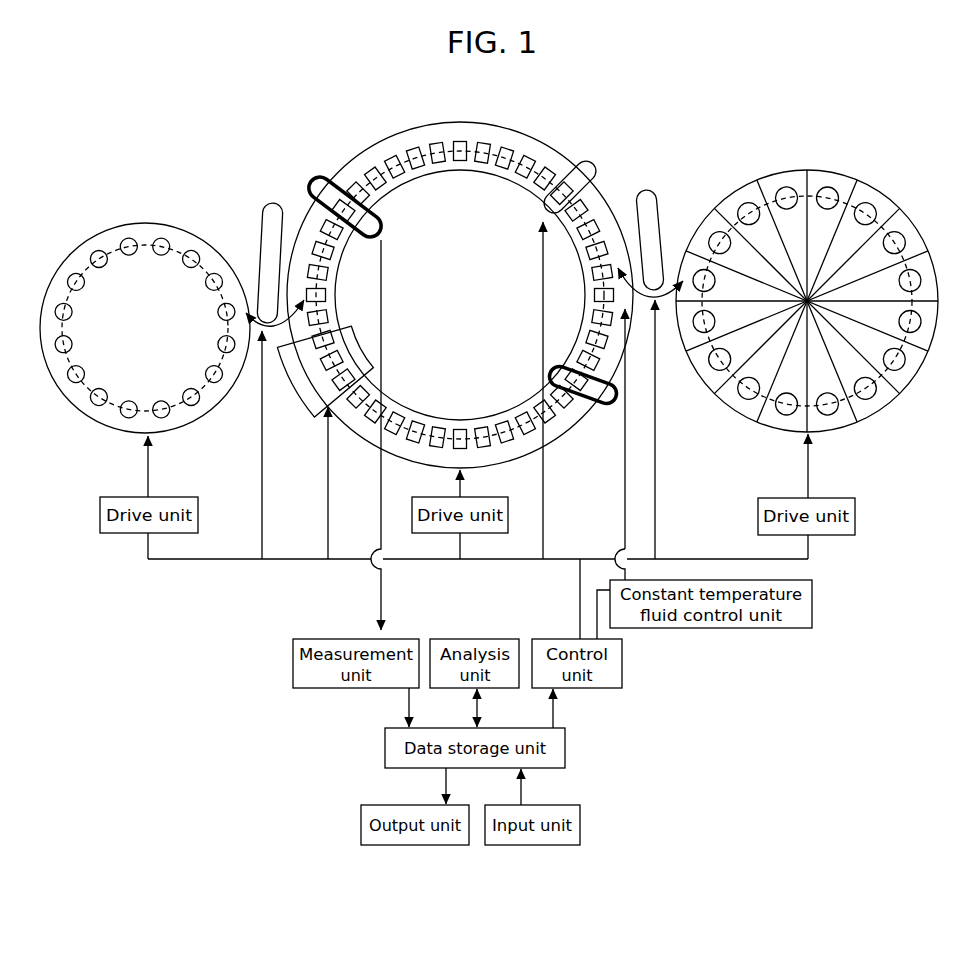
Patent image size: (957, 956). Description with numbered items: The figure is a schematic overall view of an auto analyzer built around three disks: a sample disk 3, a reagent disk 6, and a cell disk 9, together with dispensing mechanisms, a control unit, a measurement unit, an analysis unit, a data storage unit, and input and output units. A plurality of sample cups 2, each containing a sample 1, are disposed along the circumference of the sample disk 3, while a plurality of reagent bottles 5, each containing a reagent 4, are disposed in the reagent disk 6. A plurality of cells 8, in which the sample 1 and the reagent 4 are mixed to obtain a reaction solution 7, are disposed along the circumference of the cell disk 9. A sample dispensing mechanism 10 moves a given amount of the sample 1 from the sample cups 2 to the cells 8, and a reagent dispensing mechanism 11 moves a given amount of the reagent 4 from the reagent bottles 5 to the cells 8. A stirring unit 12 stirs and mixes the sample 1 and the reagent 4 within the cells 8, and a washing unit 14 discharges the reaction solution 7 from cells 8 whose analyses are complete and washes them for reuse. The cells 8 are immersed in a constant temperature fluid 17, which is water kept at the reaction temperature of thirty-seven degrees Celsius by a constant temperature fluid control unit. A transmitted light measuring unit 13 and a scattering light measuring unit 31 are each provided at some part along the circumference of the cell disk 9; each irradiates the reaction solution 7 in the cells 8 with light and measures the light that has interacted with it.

The sample 1 is at (165, 240).
The sample cup 2 is at (130, 237).
The sample disk 3 is at (100, 233).
The reagent 4 is at (830, 192).
The reagent bottle 5 is at (786, 193).
The reagent disk 6 is at (741, 178).
The reaction solution 7 is at (484, 142).
The cell 8 is at (460, 139).
The cell disk 9 is at (434, 125).
The sample dispensing mechanism 10 is at (265, 208).
The reagent dispensing mechanism 11 is at (652, 205).
The stirring unit 12 is at (597, 164).
The transmitted light measuring unit 13 is at (322, 178).
The washing unit 14 is at (311, 410).
The constant temperature fluid 17 is at (545, 160).
The scattering light measuring unit 31 is at (600, 401).